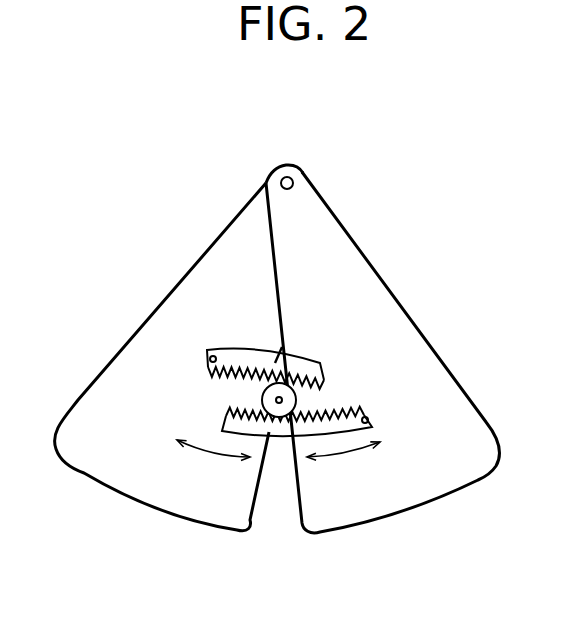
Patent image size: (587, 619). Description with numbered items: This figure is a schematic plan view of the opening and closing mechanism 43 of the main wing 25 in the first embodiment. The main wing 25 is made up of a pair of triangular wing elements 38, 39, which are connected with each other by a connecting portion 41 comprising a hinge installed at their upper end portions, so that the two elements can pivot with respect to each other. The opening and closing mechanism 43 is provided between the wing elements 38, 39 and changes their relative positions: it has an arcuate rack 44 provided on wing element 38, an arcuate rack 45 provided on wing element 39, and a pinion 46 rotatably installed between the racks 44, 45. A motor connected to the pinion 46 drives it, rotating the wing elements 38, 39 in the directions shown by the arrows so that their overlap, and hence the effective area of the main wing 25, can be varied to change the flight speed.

The main wing 25 is at (369, 232).
The wing element 38 is at (388, 305).
The wing element 39 is at (155, 313).
The connecting portion 41 is at (303, 170).
The opening and closing mechanism 43 is at (273, 473).
The arcuate rack 44 is at (370, 423).
The arcuate rack 45 is at (230, 353).
The pinion 46 is at (294, 392).